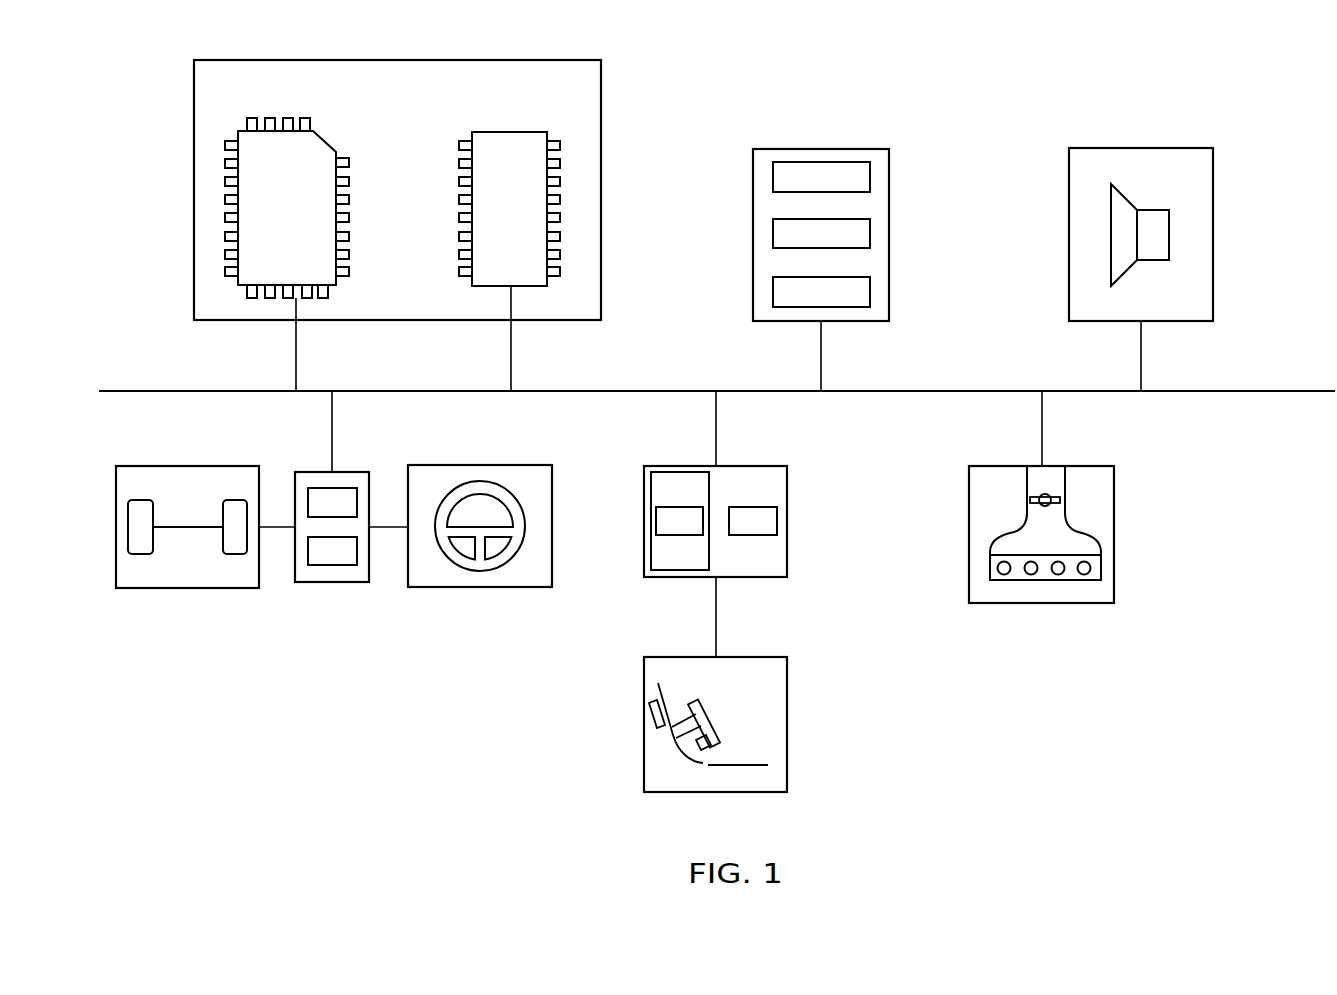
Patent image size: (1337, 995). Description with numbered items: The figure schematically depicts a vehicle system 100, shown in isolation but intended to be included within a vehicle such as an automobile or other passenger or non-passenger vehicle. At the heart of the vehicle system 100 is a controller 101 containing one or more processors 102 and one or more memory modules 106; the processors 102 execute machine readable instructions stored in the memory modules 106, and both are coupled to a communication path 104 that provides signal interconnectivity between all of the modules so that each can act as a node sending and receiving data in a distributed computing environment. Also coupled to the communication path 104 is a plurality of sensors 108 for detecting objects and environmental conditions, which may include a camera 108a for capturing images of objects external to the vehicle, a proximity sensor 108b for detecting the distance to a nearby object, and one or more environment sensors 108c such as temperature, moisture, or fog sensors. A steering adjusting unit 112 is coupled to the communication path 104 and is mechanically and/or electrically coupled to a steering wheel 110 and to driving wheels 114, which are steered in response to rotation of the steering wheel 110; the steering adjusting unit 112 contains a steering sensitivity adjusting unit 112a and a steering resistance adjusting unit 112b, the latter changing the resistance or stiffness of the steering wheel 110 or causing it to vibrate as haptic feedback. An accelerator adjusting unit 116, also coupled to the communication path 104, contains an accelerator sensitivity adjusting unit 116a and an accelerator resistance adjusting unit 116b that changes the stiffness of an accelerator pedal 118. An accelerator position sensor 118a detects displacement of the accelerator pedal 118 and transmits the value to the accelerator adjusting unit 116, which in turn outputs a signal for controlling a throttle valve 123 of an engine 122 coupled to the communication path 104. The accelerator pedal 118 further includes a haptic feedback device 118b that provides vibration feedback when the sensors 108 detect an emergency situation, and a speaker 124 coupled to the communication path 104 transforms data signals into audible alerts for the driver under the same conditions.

The vehicle system 100 is at (1247, 125).
The controller 101 is at (601, 83).
The processors 102 is at (313, 131).
The communication path 104 is at (1245, 391).
The memory modules 106 is at (508, 132).
The plurality of sensors 108 is at (821, 149).
The camera 108a is at (870, 180).
The proximity sensor 108b is at (870, 236).
The environment sensors 108c is at (870, 293).
The steering wheel 110 is at (480, 587).
The steering adjusting unit 112 is at (307, 582).
The steering sensitivity adjusting unit 112a is at (345, 488).
The steering resistance adjusting unit 112b is at (345, 565).
The driving wheels 114 is at (193, 588).
The accelerator adjusting unit 116 is at (787, 480).
The accelerator sensitivity adjusting unit 116a is at (651, 520).
The accelerator resistance adjusting unit 116b is at (777, 520).
The accelerator pedal 118 is at (787, 725).
The accelerator position sensor 118a is at (649, 716).
The haptic feedback device 118b is at (706, 765).
The engine 122 is at (1114, 493).
The throttle valve 123 is at (1028, 498).
The speaker 124 is at (1148, 148).